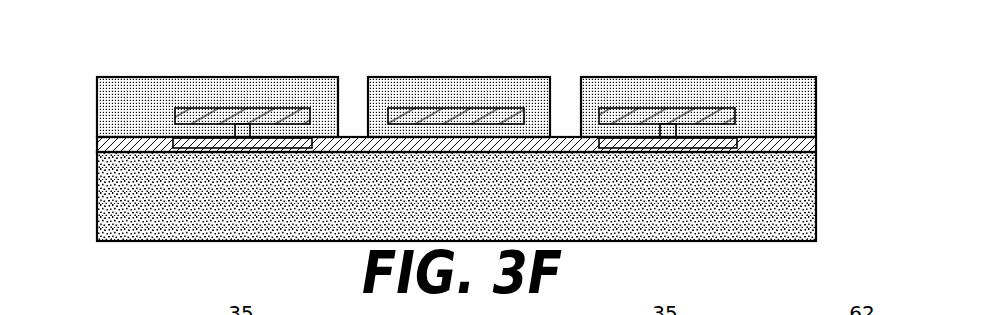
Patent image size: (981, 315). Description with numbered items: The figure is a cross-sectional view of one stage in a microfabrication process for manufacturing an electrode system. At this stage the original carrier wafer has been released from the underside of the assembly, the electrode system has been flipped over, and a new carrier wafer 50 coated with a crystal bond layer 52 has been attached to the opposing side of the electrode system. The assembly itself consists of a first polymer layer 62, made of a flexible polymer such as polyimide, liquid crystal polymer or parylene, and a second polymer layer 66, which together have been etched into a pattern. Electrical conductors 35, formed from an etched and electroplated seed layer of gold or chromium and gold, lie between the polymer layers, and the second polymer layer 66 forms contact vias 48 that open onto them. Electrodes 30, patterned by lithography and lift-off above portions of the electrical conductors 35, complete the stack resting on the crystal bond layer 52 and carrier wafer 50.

The electrode 30 is at (155, 135).
The electrical conductor 35 is at (303, 115).
The contact via 48 is at (238, 128).
The carrier wafer 50 is at (817, 192).
The crystal bond layer 52 is at (97, 146).
The first polymer layer 62 is at (803, 87).
The second polymer layer 66 is at (817, 123).